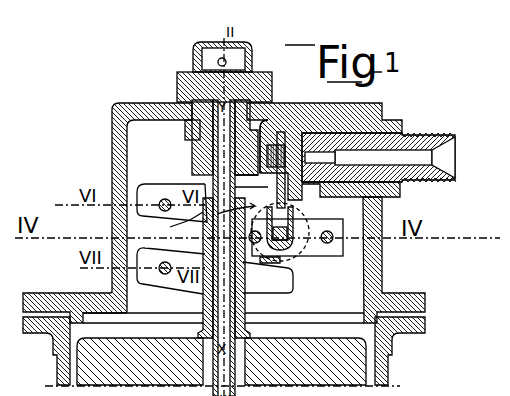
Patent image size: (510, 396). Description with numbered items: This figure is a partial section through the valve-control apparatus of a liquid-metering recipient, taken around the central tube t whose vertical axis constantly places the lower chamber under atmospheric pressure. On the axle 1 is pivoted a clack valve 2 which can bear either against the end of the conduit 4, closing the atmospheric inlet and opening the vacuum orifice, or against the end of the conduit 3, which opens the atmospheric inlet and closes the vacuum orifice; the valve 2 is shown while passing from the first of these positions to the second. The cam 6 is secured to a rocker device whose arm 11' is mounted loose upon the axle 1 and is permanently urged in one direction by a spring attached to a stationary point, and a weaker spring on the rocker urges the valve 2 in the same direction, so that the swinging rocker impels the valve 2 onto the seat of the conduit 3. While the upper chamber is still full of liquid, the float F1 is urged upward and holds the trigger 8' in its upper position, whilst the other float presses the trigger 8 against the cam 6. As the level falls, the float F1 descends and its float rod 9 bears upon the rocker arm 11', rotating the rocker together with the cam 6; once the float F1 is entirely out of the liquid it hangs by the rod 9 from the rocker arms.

The axle 1 is at (288, 229).
The clack valve 2 is at (284, 146).
The conduit 3 is at (318, 132).
The conduit 4 is at (262, 132).
The cam 6 is at (280, 266).
The trigger 8 is at (268, 292).
The trigger 8' is at (172, 189).
The float rod 9 is at (204, 220).
The rocker arm 11' is at (336, 234).
The central tube t is at (233, 59).
The float F1 is at (366, 373).